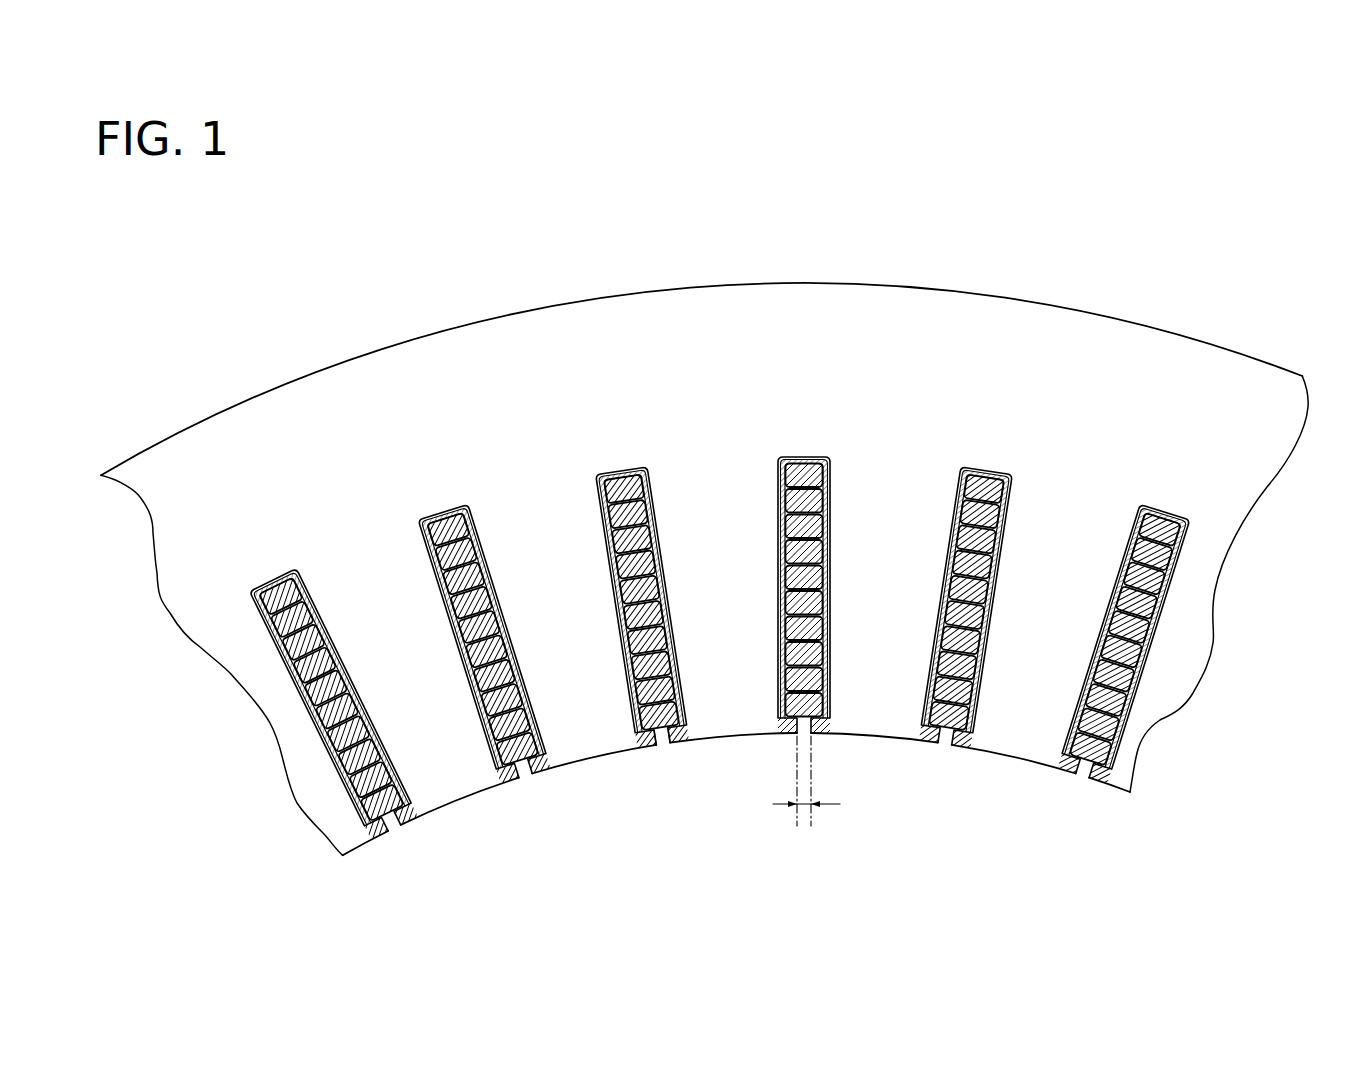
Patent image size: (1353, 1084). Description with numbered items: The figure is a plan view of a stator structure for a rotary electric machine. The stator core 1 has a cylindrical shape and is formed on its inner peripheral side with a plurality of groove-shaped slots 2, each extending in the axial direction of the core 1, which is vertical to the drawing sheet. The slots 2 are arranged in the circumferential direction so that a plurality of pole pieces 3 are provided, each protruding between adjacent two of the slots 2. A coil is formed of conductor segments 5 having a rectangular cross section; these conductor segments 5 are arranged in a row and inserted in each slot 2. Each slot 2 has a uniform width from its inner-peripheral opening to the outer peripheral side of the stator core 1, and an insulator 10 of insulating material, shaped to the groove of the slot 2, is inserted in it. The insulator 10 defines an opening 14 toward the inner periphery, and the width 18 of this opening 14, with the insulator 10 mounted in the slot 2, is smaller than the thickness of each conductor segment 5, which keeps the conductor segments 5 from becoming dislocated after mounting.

The stator core 1 is at (553, 332).
The slot 2 is at (368, 805).
The pole piece 3 is at (597, 752).
The conductor segment 5 is at (946, 722).
The insulator 10 is at (308, 723).
The opening 14 is at (665, 742).
The width 18 is at (806, 797).